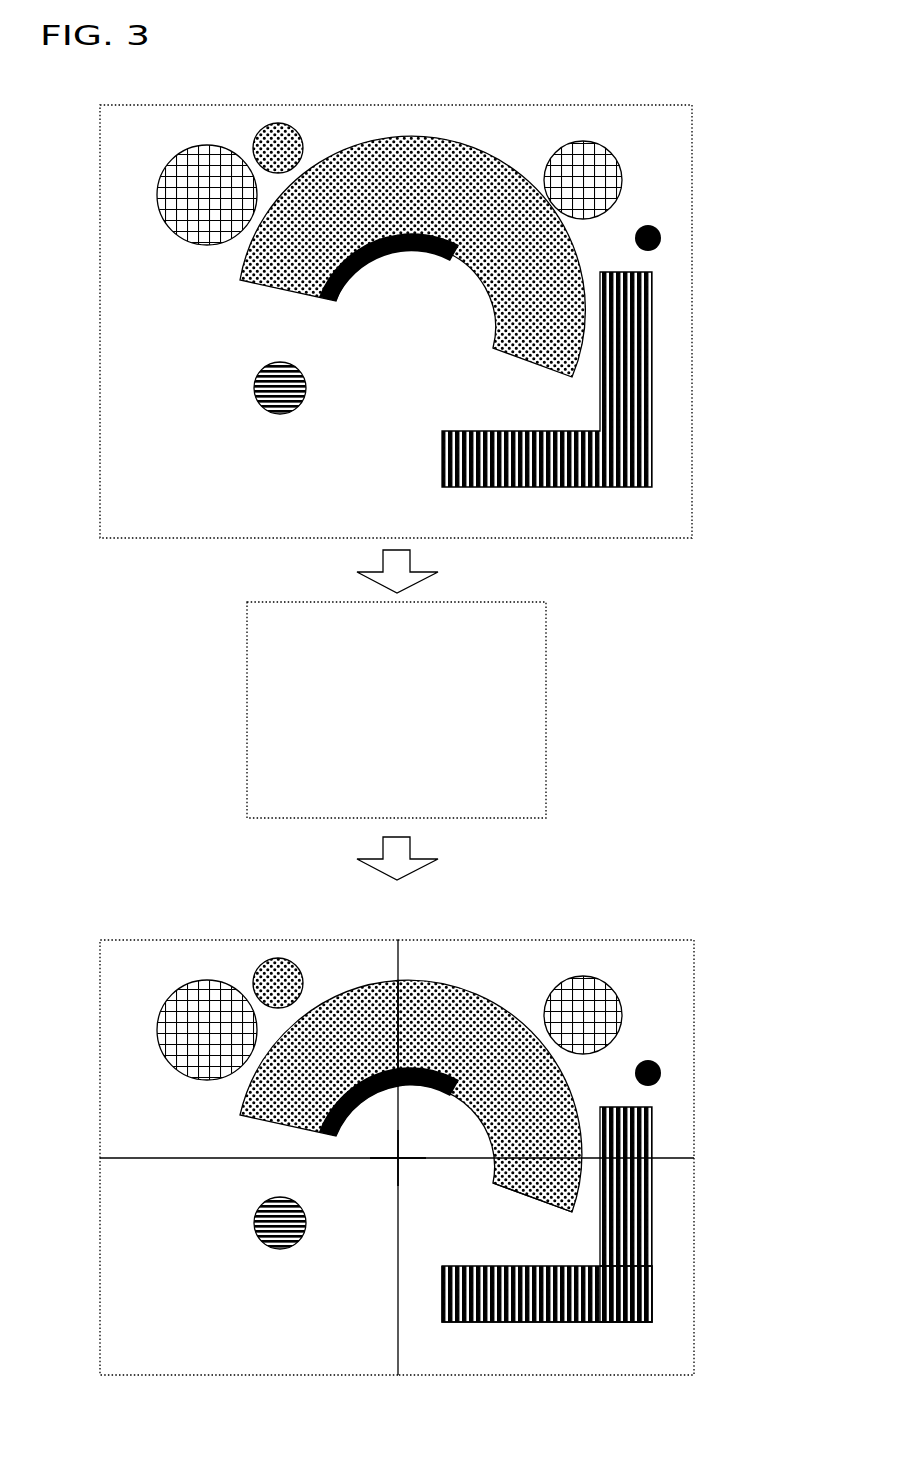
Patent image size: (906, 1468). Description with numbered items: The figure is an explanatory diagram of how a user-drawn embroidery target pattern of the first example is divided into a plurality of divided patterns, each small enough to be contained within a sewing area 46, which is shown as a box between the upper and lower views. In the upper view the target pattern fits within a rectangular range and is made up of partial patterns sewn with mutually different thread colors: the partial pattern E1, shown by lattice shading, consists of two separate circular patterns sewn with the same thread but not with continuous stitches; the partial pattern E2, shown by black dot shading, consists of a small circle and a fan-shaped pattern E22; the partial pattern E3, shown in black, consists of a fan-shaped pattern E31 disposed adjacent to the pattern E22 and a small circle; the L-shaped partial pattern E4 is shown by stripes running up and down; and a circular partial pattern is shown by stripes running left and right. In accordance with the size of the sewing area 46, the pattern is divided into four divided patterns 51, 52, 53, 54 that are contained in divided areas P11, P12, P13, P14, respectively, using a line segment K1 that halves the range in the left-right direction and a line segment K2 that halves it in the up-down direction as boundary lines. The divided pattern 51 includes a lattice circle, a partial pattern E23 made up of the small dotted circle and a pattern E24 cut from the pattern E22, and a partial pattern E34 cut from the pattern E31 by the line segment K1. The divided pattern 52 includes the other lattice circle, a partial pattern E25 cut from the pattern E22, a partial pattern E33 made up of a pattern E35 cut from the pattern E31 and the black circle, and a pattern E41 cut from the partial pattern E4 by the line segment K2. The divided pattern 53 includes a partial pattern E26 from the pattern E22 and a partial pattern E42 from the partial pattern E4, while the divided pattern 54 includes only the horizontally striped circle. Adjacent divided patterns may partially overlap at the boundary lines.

The sewing area 46 is at (548, 676).
The divided pattern 51 is at (228, 1016).
The divided pattern 52 is at (593, 1049).
The divided pattern 53 is at (592, 1266).
The divided pattern 54 is at (221, 1267).
The line segment K1 is at (367, 1139).
The line segment K2 is at (434, 1128).
The divided area P11 is at (380, 1142).
The divided area P12 is at (417, 1142).
The divided area P13 is at (417, 1173).
The divided area P14 is at (380, 1173).
The partial pattern E1 is at (382, 177).
The partial pattern E2 is at (400, 78).
The pattern E22 is at (330, 158).
The partial pattern E23 is at (397, 1057).
The pattern E24 is at (319, 1015).
The partial pattern E25 is at (490, 1058).
The partial pattern E26 is at (532, 1225).
The partial pattern E3 is at (504, 257).
The pattern E31 is at (336, 304).
The partial pattern E33 is at (504, 1091).
The partial pattern E34 is at (358, 1138).
The pattern E35 is at (451, 1145).
The partial pattern E4 is at (452, 430).
The pattern E41 is at (670, 1189).
The partial pattern E42 is at (599, 1294).